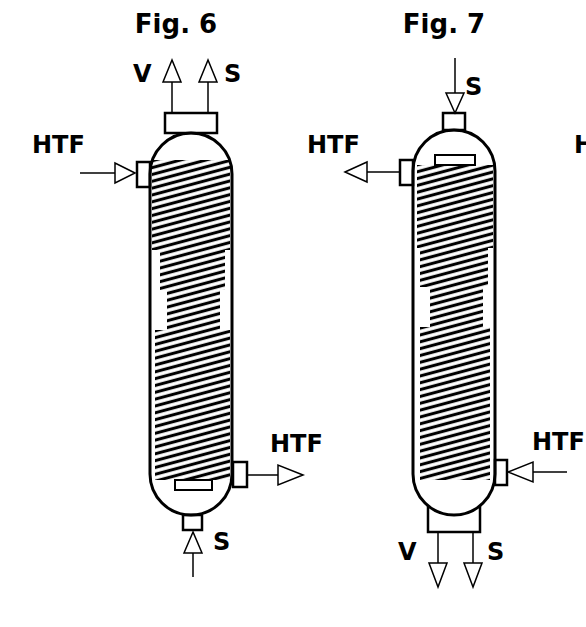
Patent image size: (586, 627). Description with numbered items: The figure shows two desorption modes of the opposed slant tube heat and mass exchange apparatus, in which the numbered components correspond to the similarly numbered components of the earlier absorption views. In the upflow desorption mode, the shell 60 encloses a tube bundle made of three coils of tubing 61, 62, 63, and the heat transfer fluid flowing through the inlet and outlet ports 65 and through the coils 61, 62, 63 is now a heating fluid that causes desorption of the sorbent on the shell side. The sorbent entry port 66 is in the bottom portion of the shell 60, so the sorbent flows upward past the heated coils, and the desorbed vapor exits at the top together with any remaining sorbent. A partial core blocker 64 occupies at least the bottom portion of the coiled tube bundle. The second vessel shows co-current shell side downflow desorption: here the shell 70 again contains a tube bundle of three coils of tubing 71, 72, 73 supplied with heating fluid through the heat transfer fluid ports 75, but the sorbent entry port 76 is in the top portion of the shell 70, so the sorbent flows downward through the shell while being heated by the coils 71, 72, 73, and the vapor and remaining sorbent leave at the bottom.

In FIG. 6, the shell 60 is at (233, 373).
In FIG. 6, the first coil of tubing 61 is at (217, 195).
In FIG. 6, the second coil of tubing 62 is at (213, 260).
In FIG. 6, the third coil of tubing 63 is at (212, 312).
In FIG. 6, the core blocker 64 is at (193, 499).
In FIG. 6, the heat transfer fluid inlet and outlet ports 65 is at (137, 187).
In FIG. 6, the sorbent entry port 66 is at (183, 523).
In FIG. 7, the shell 70 is at (498, 380).
In FIG. 7, the first coil of tubing 71 is at (477, 215).
In FIG. 7, the second coil of tubing 72 is at (477, 272).
In FIG. 7, the third coil of tubing 73 is at (475, 320).
In FIG. 7, the heat transfer fluid inlet and outlet ports 75 is at (407, 187).
In FIG. 7, the sorbent entry port 76 is at (465, 125).